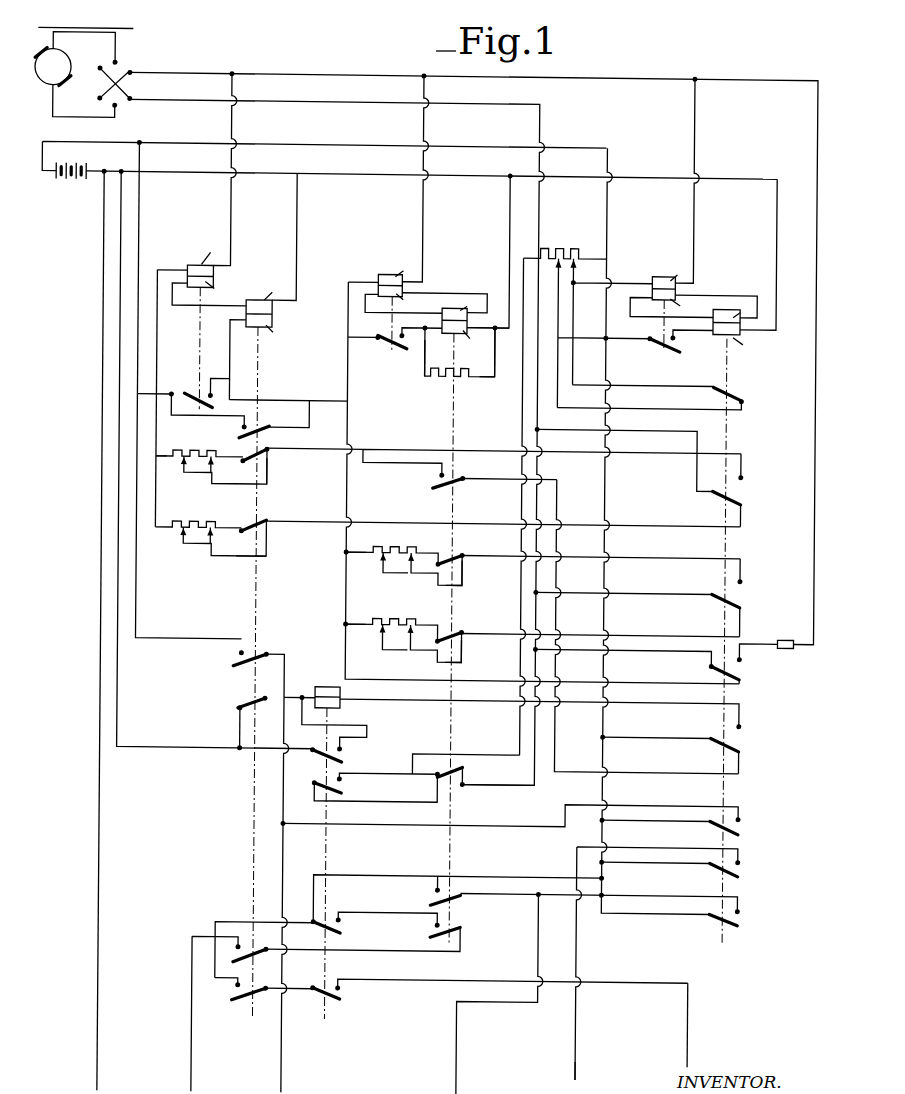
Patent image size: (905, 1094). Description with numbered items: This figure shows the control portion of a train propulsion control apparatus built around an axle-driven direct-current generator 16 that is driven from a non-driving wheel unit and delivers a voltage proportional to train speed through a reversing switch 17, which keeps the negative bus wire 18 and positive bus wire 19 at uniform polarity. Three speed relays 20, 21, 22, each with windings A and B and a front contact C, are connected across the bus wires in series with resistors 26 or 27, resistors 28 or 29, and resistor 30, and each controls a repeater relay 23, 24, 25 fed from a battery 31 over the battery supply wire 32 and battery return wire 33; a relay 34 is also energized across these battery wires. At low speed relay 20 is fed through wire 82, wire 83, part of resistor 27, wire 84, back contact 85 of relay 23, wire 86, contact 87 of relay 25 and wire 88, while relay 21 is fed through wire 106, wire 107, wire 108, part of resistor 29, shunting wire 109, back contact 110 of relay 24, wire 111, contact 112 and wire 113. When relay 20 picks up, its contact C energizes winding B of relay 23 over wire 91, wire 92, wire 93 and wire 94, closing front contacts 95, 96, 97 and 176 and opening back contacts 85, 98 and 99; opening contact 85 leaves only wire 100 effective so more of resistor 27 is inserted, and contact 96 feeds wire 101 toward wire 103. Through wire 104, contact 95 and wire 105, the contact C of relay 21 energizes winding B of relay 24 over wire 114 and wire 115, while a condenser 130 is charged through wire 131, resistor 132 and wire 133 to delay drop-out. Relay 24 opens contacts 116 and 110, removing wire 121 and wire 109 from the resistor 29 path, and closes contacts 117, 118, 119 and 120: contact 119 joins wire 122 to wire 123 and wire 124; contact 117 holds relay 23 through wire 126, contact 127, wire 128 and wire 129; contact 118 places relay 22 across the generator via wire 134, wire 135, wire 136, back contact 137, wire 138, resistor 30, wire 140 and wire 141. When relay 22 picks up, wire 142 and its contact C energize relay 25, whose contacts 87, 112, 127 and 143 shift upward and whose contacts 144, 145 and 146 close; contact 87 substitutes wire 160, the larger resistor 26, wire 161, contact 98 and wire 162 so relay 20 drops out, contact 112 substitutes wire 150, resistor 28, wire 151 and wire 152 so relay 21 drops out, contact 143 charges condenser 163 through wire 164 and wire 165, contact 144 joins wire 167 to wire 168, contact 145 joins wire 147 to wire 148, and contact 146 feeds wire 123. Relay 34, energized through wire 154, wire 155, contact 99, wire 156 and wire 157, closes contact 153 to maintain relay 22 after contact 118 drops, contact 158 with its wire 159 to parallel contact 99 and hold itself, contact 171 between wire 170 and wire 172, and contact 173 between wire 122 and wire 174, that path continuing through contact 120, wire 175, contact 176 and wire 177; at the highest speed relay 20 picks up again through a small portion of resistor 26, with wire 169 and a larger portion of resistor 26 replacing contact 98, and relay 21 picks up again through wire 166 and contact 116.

The axle-driven generator 16 is at (69, 52).
The reversing switch 17 is at (123, 78).
The bus wire 18 is at (232, 70).
The bus wire 19 is at (212, 104).
The voltage-responsive control relay 20 is at (197, 267).
The voltage-responsive control relay 21 is at (383, 273).
The voltage-responsive control relay 22 is at (676, 272).
The repeater control relay 23 is at (267, 282).
The repeater control relay 24 is at (459, 361).
The repeater control relay 25 is at (730, 371).
The resistor 26 is at (193, 448).
The resistor 27 is at (193, 518).
The resistor 28 is at (426, 545).
The resistor 29 is at (426, 618).
The resistor 30 is at (563, 490).
The battery 31 is at (88, 179).
The battery supply wire 32 is at (128, 145).
The battery return wire 33 is at (214, 172).
The relay 34 is at (335, 680).
The wire 82 is at (233, 130).
The wire 83 is at (158, 356).
The wire 84 is at (198, 546).
The back contact member 85 is at (249, 524).
The wire 86 is at (329, 512).
The front and back contact member 87 is at (747, 493).
The wire 88 is at (654, 434).
The wire 91 is at (141, 208).
The wire 92 is at (156, 394).
The wire 93 is at (204, 380).
The wire 94 is at (300, 214).
The front contact member 95 is at (260, 426).
The front contact member 96 is at (203, 530).
The front contact member 97 is at (247, 1000).
The back contact member 98 is at (258, 447).
The back contact member 99 is at (252, 694).
The wire 100 is at (262, 558).
The wire 101 is at (288, 806).
The wire 103 is at (105, 900).
The wire 104 is at (229, 409).
The wire 105 is at (329, 335).
The wire 106 is at (424, 160).
The wire 107 is at (352, 484).
The wire 108 is at (362, 625).
The shunting wire 109 is at (402, 652).
The back contact member 110 is at (445, 630).
The wire 111 is at (638, 629).
The front and back contact member 112 is at (746, 601).
The wire 113 is at (686, 590).
The wire 114 is at (398, 330).
The wire 115 is at (488, 253).
The back contact member 116 is at (445, 555).
The front contact member 117 is at (453, 463).
The front contact member 118 is at (429, 782).
The front contact member 119 is at (434, 890).
The front contact member 120 is at (433, 938).
The wire 121 is at (468, 650).
The wire 122 is at (552, 874).
The wire 123 is at (561, 897).
The wire 124 is at (463, 1072).
The wire 126 is at (687, 736).
The contact member 127 is at (747, 741).
The wire 128 is at (584, 759).
The wire 129 is at (272, 400).
The condenser 130 is at (459, 365).
The wire 131 is at (512, 352).
The resistor 132 is at (481, 379).
The wire 133 is at (426, 374).
The wire 134 is at (697, 137).
The wire 135 is at (617, 280).
The wire 136 is at (576, 290).
The back contact member 137 is at (748, 390).
The wire 138 is at (603, 334).
The wire 140 is at (524, 723).
The wire 141 is at (470, 769).
The wire 142 is at (620, 340).
The front and back contact member 143 is at (748, 670).
The front contact member 144 is at (747, 829).
The front contact member 145 is at (748, 875).
The front contact member 146 is at (744, 928).
The wire 147 is at (692, 870).
The wire 148 is at (583, 1060).
The wire 150 is at (362, 552).
The wire 151 is at (468, 578).
The wire 152 is at (504, 547).
The contact member 153 is at (345, 791).
The wire 154 is at (692, 704).
The wire 155 is at (290, 696).
The wire 156 is at (241, 735).
The wire 157 is at (175, 745).
The contact member 158 is at (348, 760).
The conductor 159 is at (366, 727).
The wire 160 is at (164, 455).
The wire 161 is at (199, 484).
The wire 162 is at (344, 451).
The condenser 163 is at (798, 636).
The wire 164 is at (643, 663).
The wire 165 is at (753, 643).
The wire 166 is at (388, 576).
The wire 167 is at (684, 822).
The wire 168 is at (474, 828).
The wire 169 is at (272, 470).
The wire 170 is at (301, 991).
The contact member 171 is at (340, 1002).
The wire 172 is at (695, 1041).
The contact member 173 is at (344, 934).
The wire 174 is at (382, 908).
The wire 175 is at (408, 952).
The front contact member 176 is at (248, 957).
The wire 177 is at (192, 1037).